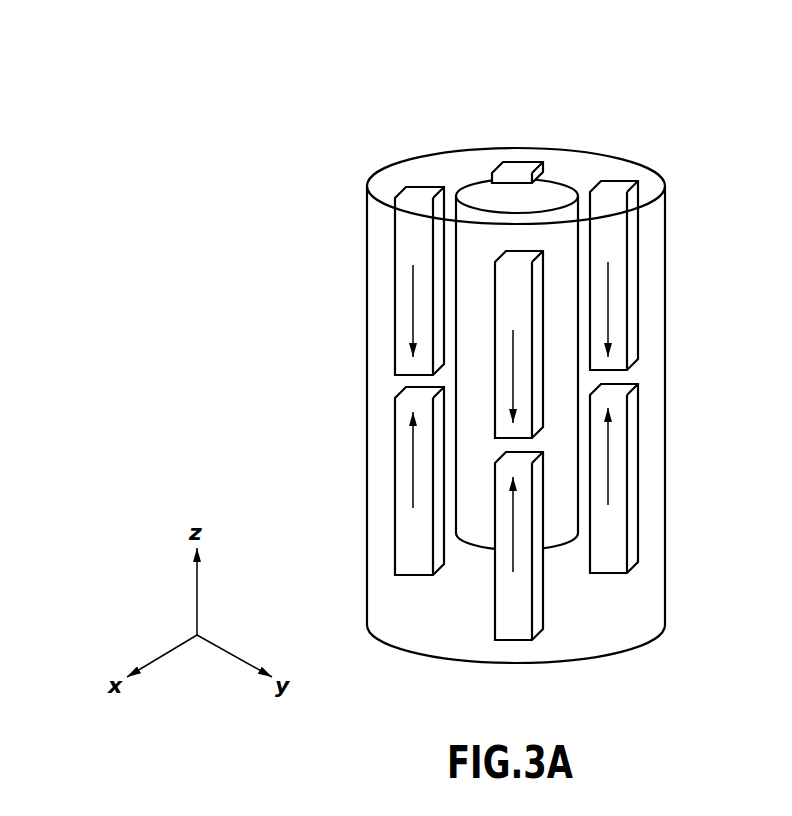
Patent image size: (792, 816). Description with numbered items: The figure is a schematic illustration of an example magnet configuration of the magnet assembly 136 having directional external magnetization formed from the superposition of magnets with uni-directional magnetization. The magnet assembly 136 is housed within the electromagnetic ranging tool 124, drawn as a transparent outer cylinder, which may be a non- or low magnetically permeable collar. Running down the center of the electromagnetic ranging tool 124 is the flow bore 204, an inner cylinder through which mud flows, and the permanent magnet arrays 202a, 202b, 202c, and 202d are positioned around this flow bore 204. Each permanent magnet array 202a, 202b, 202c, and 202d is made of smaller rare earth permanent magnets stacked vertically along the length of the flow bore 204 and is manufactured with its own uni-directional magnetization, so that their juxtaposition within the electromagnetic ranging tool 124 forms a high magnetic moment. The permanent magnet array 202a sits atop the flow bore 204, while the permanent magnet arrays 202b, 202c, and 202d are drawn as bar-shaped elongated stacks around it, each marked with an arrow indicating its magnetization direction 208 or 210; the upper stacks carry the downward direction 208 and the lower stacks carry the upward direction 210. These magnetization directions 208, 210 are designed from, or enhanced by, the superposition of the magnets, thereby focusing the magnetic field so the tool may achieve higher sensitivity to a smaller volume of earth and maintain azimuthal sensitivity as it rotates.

The magnet assembly 136 is at (517, 364).
The electromagnetic ranging tool 124 is at (367, 210).
The permanent magnet array 202a is at (517, 163).
The permanent magnet array 202b is at (395, 232).
The permanent magnet array 202c is at (508, 283).
The permanent magnet array 202d is at (635, 232).
The flow bore 204 is at (550, 200).
The magnetization direction 208 is at (413, 292).
The magnetization direction 210 is at (413, 452).